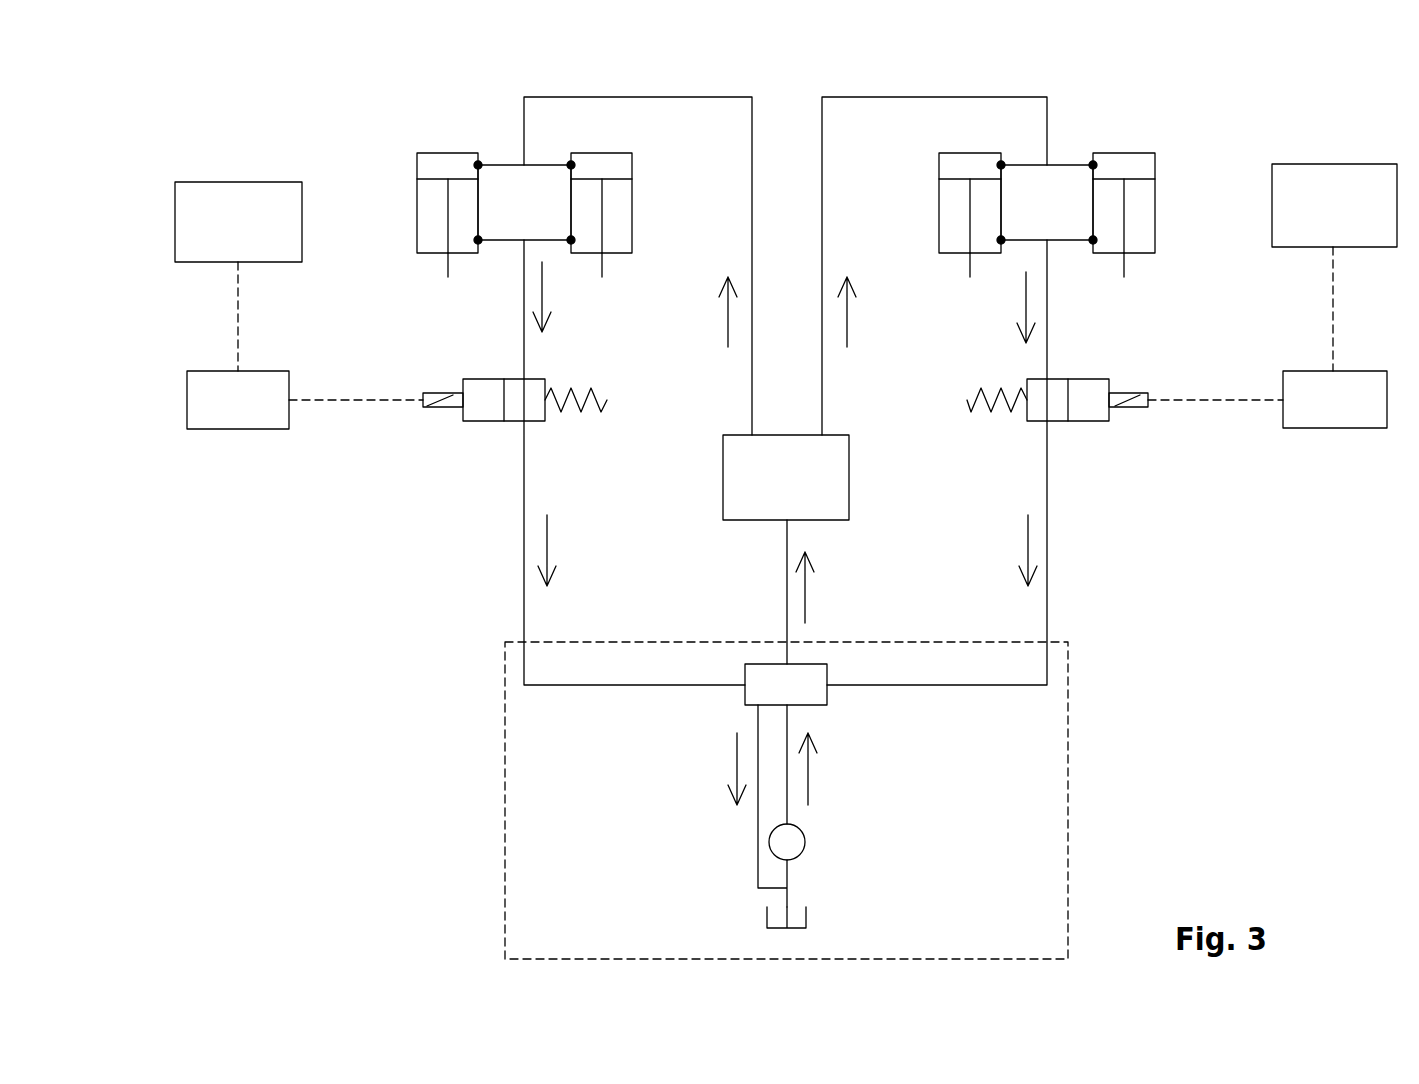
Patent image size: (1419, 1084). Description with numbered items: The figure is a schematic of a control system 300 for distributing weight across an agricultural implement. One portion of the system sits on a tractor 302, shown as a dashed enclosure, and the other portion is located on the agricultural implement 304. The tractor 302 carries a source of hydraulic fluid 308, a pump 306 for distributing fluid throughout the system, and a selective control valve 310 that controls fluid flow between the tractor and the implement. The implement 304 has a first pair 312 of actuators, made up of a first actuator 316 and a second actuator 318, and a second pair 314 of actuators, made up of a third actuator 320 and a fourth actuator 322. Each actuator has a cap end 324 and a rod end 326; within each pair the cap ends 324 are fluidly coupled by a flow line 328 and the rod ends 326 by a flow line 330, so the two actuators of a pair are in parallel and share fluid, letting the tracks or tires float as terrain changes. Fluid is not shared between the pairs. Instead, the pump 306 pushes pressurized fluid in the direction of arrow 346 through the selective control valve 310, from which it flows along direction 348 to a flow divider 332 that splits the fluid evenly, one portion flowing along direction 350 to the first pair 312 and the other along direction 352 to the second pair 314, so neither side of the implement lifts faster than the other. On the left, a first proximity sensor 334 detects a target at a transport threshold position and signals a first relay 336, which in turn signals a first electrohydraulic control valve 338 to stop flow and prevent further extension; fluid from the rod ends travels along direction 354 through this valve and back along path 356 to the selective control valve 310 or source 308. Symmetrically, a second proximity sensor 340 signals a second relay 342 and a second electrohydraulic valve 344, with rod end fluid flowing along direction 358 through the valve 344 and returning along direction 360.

The control system 300 is at (235, 670).
The tractor 302 is at (505, 806).
The agricultural implement 304 is at (1168, 617).
The pump 306 is at (805, 842).
The source of hydraulic fluid 308 is at (767, 918).
The selective control valve 310 is at (827, 690).
The first pair of actuators 312 is at (378, 100).
The second pair of actuators 314 is at (1178, 140).
The first actuator 316 is at (410, 192).
The second actuator 318 is at (640, 185).
The third actuator 320 is at (935, 190).
The fourth actuator 322 is at (1168, 232).
The cap end 324 is at (1124, 153).
The rod end 326 is at (1138, 253).
The cap end flow line 328 is at (1065, 165).
The rod end flow line 330 is at (1065, 240).
The flow divider 332 is at (723, 490).
The first proximity sensor 334 is at (238, 182).
The first relay 336 is at (238, 429).
The first electrohydraulic control valve 338 is at (483, 421).
The second proximity sensor 340 is at (1333, 164).
The second relay 342 is at (1333, 428).
The second electrohydraulic valve 344 is at (1085, 420).
The pump flow direction 346 is at (808, 768).
The flow direction to flow divider 348 is at (805, 588).
The first flow direction 350 is at (728, 315).
The second flow direction 352 is at (847, 305).
The rod end fluid direction 354 is at (542, 288).
The return fluid path 356 is at (547, 548).
The rod end flow direction 358 is at (737, 770).
The return flow direction 360 is at (1028, 552).